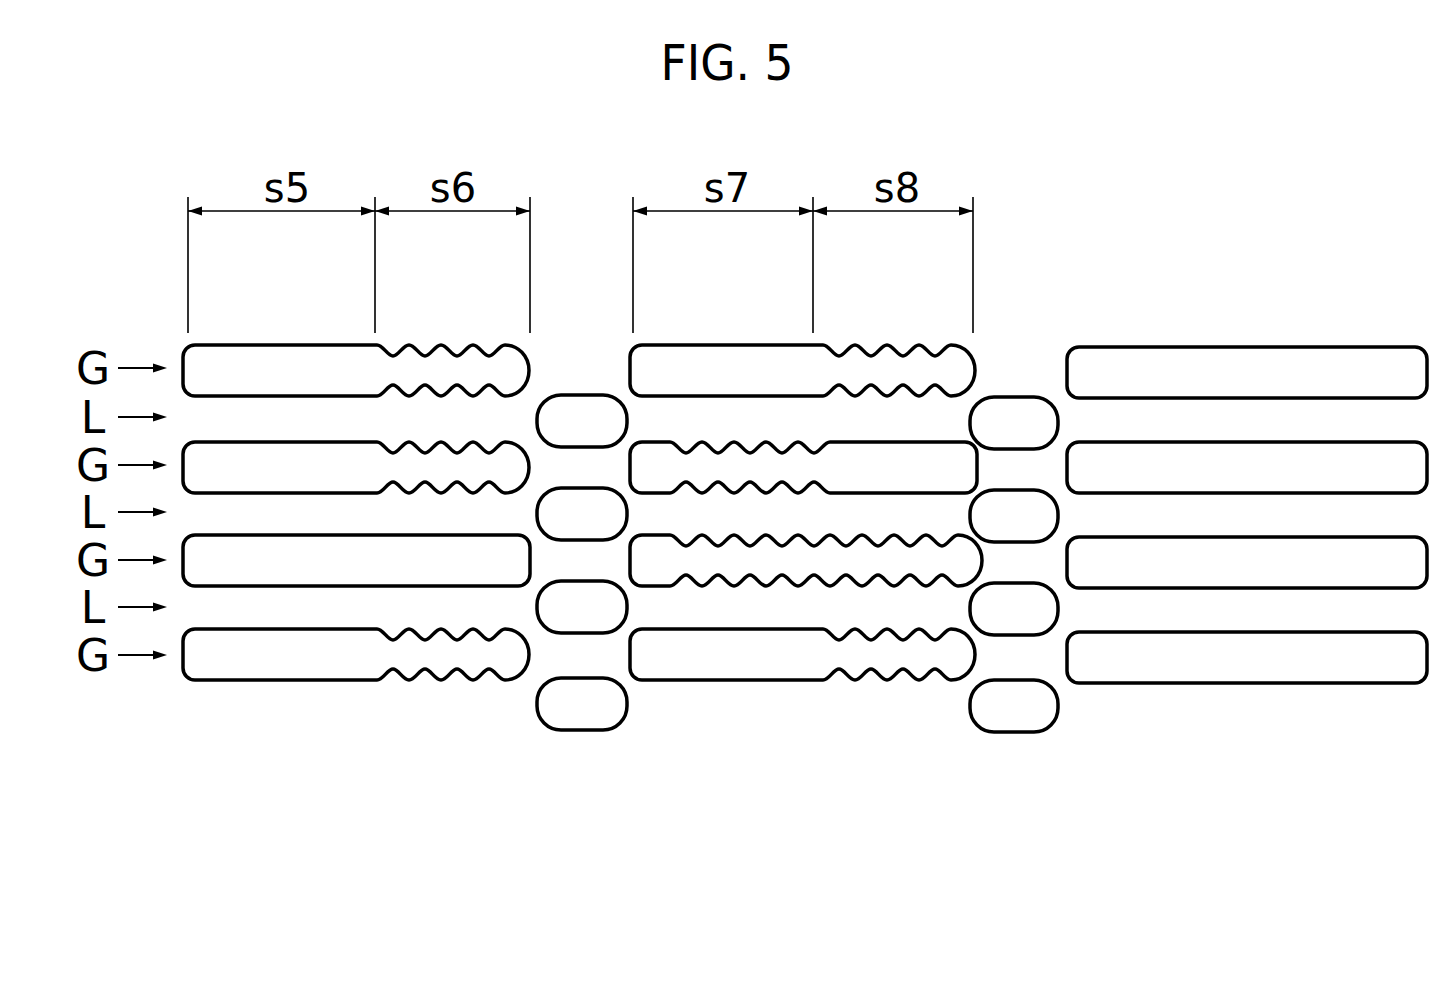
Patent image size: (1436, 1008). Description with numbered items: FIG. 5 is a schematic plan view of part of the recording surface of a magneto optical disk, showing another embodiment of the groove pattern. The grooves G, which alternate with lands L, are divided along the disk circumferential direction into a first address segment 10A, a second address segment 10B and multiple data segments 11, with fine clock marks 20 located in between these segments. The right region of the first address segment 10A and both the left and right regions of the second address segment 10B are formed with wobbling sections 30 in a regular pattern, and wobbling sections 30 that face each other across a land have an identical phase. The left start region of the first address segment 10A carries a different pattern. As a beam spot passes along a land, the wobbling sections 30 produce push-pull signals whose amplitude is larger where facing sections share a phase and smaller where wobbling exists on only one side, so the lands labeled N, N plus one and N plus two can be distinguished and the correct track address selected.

The first address segment 10A is at (332, 362).
The second address segment 10B is at (737, 367).
The data segment 11 is at (1198, 368).
The fine clock mark 20 is at (575, 615).
The wobbling section 30 is at (433, 400).